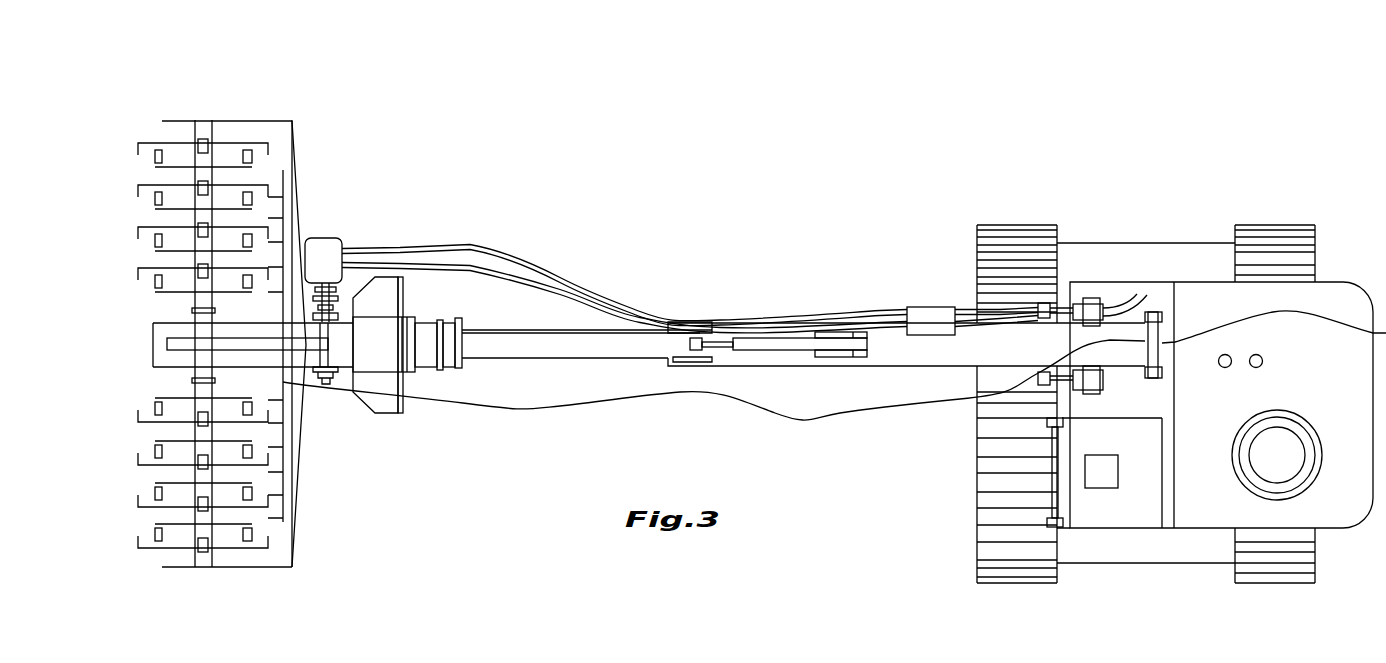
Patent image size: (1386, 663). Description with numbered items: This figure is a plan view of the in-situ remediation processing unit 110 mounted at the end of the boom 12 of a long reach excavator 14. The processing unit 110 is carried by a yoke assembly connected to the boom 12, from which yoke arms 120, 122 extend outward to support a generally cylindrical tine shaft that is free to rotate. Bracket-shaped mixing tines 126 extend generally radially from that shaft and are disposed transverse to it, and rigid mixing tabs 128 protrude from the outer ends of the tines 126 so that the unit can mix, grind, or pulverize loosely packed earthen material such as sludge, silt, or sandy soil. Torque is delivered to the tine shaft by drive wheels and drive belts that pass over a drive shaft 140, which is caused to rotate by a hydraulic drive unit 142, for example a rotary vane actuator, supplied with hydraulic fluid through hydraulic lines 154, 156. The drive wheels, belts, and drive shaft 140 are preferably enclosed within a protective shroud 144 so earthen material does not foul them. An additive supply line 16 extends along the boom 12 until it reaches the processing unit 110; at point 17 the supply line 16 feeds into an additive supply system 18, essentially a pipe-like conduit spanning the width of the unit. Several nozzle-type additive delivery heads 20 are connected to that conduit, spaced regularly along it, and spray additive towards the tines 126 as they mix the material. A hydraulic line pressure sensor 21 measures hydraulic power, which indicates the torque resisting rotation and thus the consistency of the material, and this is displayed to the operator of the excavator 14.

The in-situ remediation processing unit 110 is at (180, 104).
The yoke arm 120 is at (250, 120).
The yoke arm 122 is at (237, 567).
The mixing tab 128 is at (153, 160).
The mixing tine 126 is at (153, 528).
The protective shroud 144 is at (153, 345).
The additive delivery head 20 is at (275, 172).
The additive supply system 18 is at (288, 230).
The hydraulic drive unit 142 is at (325, 240).
The drive shaft 140 is at (333, 372).
The point 17 is at (287, 385).
The boom 12 is at (705, 306).
The hydraulic line 154 is at (467, 247).
The hydraulic line 156 is at (508, 278).
The hydraulic line pressure sensor 21 is at (938, 307).
The supply line 16 is at (812, 418).
The long reach excavator 14 is at (1161, 234).